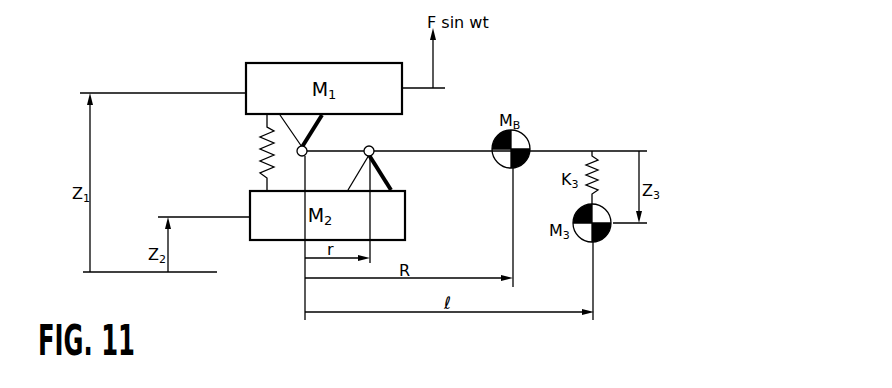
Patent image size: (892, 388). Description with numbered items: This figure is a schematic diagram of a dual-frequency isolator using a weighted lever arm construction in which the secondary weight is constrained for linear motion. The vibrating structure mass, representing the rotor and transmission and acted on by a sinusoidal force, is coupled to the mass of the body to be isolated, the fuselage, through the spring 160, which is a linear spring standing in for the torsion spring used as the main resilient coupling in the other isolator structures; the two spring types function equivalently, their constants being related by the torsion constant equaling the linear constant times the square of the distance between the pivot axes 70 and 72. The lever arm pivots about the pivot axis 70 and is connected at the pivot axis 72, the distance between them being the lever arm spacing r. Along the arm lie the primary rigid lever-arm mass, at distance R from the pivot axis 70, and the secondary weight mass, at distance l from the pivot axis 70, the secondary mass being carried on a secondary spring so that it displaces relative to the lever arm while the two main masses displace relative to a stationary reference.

The pivot axis 70 is at (308, 148).
The pivot axis 72 is at (375, 148).
The spring 160 is at (260, 161).